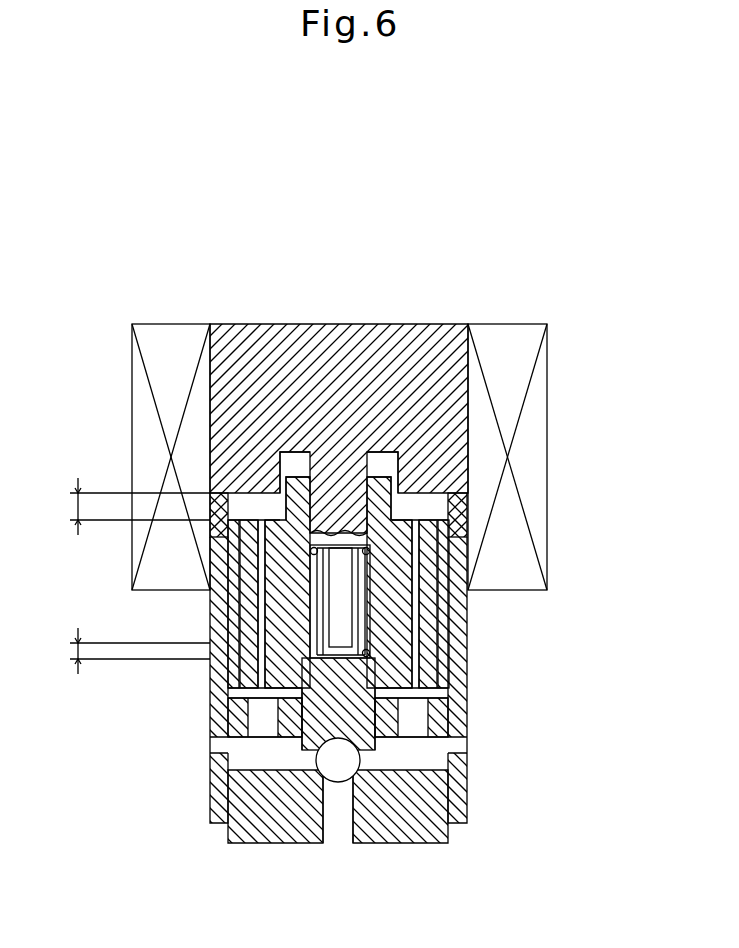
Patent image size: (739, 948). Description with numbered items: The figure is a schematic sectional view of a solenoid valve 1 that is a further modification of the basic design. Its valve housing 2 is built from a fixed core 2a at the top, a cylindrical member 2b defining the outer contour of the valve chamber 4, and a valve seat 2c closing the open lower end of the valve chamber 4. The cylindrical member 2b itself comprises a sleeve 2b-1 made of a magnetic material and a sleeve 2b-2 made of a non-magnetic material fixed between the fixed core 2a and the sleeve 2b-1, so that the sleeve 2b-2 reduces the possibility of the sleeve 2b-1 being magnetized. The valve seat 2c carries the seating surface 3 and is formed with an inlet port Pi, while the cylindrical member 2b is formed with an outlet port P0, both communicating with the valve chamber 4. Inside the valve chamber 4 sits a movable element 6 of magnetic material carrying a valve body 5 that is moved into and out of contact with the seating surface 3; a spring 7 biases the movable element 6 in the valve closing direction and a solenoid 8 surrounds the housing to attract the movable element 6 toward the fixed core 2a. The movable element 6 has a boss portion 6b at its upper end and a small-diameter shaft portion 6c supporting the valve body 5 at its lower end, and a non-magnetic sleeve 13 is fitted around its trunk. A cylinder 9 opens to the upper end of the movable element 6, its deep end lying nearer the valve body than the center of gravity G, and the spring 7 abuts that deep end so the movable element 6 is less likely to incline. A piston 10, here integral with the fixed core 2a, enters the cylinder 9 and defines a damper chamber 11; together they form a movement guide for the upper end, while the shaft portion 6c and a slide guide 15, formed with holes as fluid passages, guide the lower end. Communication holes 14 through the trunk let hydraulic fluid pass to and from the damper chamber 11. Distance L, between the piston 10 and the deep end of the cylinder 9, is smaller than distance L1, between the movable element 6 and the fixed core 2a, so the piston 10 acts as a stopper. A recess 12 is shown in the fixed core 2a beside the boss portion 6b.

The solenoid valve 1 is at (572, 333).
The valve housing 2 is at (212, 770).
The fixed core 2a is at (386, 338).
The cylindrical member 2b is at (646, 525).
The sleeve made of a magnetic material 2b-1 is at (458, 560).
The sleeve made of a non-magnetic material 2b-2 is at (458, 512).
The valve seat 2c is at (428, 832).
The seating surface 3 is at (362, 785).
The valve chamber 4 is at (394, 500).
The valve body 5 is at (330, 770).
The movable element 6 is at (232, 566).
The boss portion 6b is at (290, 470).
The small-diameter shaft portion 6c is at (300, 740).
The spring 7 is at (397, 660).
The solenoid 8 is at (130, 356).
The cylinder 9 is at (340, 598).
The piston 10 is at (383, 513).
The damper chamber 11 is at (410, 692).
The recess in core 12 is at (398, 468).
The non-magnetic sleeve 13 is at (250, 620).
The communication holes 14 is at (383, 641).
The slide guide 15 is at (432, 722).
The center of gravity G is at (262, 632).
The distance L is at (130, 651).
The distance L1 is at (123, 506).
The outlet port P0 is at (208, 745).
The inlet port Pi is at (335, 830).